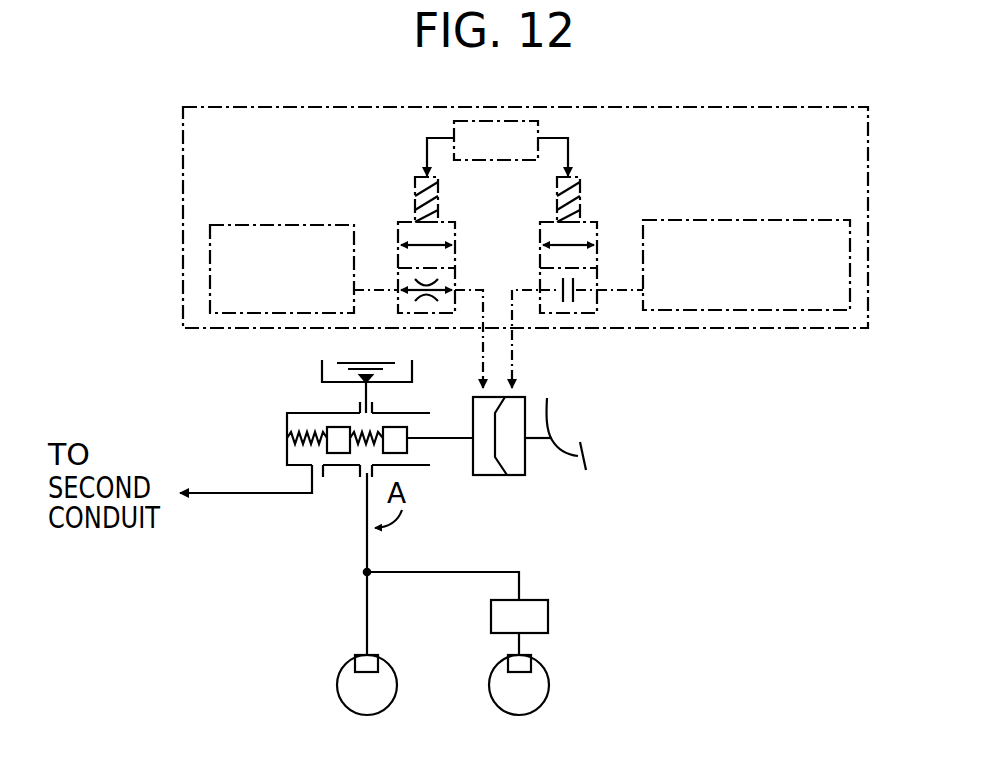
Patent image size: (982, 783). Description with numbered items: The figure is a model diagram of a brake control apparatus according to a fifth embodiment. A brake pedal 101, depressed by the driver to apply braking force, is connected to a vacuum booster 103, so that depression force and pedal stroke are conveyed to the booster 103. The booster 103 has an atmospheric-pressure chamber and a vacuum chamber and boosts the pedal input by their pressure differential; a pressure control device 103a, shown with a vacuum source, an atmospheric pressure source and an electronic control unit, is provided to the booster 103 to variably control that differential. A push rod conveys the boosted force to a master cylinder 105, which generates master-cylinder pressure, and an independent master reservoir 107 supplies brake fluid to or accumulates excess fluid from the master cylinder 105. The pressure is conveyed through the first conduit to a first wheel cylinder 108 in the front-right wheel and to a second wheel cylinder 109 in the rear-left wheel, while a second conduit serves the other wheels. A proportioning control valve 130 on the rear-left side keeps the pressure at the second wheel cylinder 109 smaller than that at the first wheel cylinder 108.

The brake pedal 101 is at (549, 425).
The booster 103 is at (528, 397).
The pressure control device 103a is at (660, 328).
The master cylinder 105 is at (287, 432).
The master reservoir 107 is at (322, 372).
The first wheel cylinder 108 is at (378, 657).
The second wheel cylinder 109 is at (531, 657).
The proportioning control valve 130 is at (548, 620).